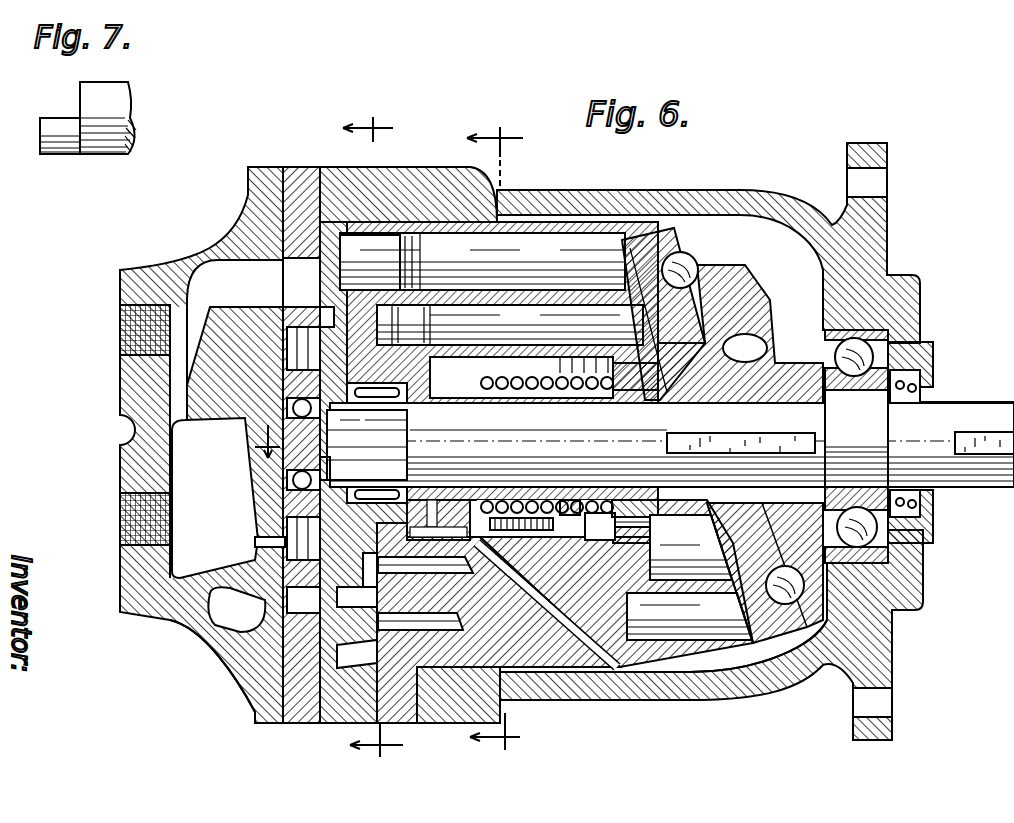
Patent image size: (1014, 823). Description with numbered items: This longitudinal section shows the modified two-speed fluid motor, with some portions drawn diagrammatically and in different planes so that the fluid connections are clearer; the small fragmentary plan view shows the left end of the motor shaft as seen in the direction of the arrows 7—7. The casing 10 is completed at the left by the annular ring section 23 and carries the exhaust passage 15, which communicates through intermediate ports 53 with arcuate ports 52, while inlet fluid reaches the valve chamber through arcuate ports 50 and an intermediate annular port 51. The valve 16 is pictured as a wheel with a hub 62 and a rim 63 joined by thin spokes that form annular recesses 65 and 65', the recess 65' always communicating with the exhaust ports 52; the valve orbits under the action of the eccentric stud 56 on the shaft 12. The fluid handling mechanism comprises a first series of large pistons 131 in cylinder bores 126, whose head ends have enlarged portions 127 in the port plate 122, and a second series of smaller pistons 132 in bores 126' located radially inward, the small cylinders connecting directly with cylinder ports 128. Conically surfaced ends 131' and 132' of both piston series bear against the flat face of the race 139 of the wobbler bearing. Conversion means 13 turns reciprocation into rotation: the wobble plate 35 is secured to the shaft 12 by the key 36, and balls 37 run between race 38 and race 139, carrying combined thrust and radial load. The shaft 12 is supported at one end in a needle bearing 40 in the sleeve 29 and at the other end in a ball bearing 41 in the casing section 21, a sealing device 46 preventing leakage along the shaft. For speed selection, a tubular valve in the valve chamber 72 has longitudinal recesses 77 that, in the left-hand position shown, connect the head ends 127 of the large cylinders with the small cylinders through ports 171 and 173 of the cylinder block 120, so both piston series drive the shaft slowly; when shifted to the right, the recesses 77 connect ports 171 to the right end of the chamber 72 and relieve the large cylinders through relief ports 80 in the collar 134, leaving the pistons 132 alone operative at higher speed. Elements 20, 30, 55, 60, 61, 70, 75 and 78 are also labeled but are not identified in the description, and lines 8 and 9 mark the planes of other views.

In FIG. 7, the eccentric stud 56 is at (65, 140).
In FIG. 6, the eccentric stud 56 is at (345, 435).
In FIG. 7, the shaft 12 is at (120, 145).
In FIG. 6, the shaft 12 is at (523, 398).
In FIG. 6, the intermediate annular port 51 is at (212, 262).
In FIG. 6, the intermediate ports 53 is at (214, 442).
In FIG. 6, the arcuate inlet ports 50 is at (265, 278).
In FIG. 6, the outlet passage 15 is at (140, 548).
In FIG. 6, the casing 10 is at (140, 370).
In FIG. 6, the casing section 21 is at (640, 690).
In FIG. 6, the housing lower arm 20 is at (225, 650).
In FIG. 6, the annular ring section 23 is at (302, 723).
In FIG. 6, the port plate 122 is at (345, 722).
In FIG. 6, the cylinder block 120 is at (410, 723).
In FIG. 6, the cylinder bores 126 is at (502, 284).
In FIG. 6, the large pistons 131 is at (482, 261).
In FIG. 6, the cylinder ports 128 is at (362, 290).
In FIG. 6, the small cylinder bores 126' is at (594, 261).
In FIG. 6, the smaller pistons 132 is at (510, 325).
In FIG. 6, the enlarged head-end portions 127 is at (348, 222).
In FIG. 6, the spring seat 78 is at (615, 400).
In FIG. 6, the sleeve 29 is at (405, 395).
In FIG. 6, the key 36 is at (765, 435).
In FIG. 6, the needle bearing 40 is at (383, 475).
In FIG. 6, the coupling part 55 is at (348, 415).
In FIG. 6, the annular recess 65 is at (337, 466).
In FIG. 6, the arrows 7— 7 is at (267, 432).
In FIG. 6, the rim 63 is at (305, 303).
In FIG. 6, the valve 16 is at (293, 293).
In FIG. 6, the ring 60 is at (283, 352).
In FIG. 6, the arcuate exhaust ports 52 is at (283, 370).
In FIG. 6, the hub 62 is at (283, 388).
In FIG. 6, the annular recess 65' is at (249, 547).
In FIG. 6, the wobbler bearing race 139 is at (640, 240).
In FIG. 6, the bearing race 38 is at (738, 280).
In FIG. 6, the balls 37 is at (695, 262).
In FIG. 6, the wobble plate 35 is at (765, 348).
In FIG. 6, the conversion means 13 is at (771, 304).
In FIG. 6, the ball bearing 41 is at (895, 345).
In FIG. 6, the sealing device 46 is at (925, 385).
In FIG. 6, the cylinder barrel 30 is at (585, 548).
In FIG. 6, the cylinder block port 173 is at (410, 560).
In FIG. 6, the cylinder block port 171 is at (395, 660).
In FIG. 6, the plug 61 is at (357, 580).
In FIG. 6, the bracket 70 is at (455, 495).
In FIG. 6, the longitudinal recesses 77 is at (512, 500).
In FIG. 6, the spring seat 75 is at (567, 500).
In FIG. 6, the relief ports 80 is at (662, 530).
In FIG. 6, the valve chamber 72 is at (605, 540).
In FIG. 6, the collar 134 is at (632, 500).
In FIG. 6, the conically surfaced ends 132' is at (691, 547).
In FIG. 6, the conically surfaced ends 131' is at (689, 616).
In FIG. 6, the section line 9 is at (373, 438).
In FIG. 6, the section line 8 is at (495, 436).